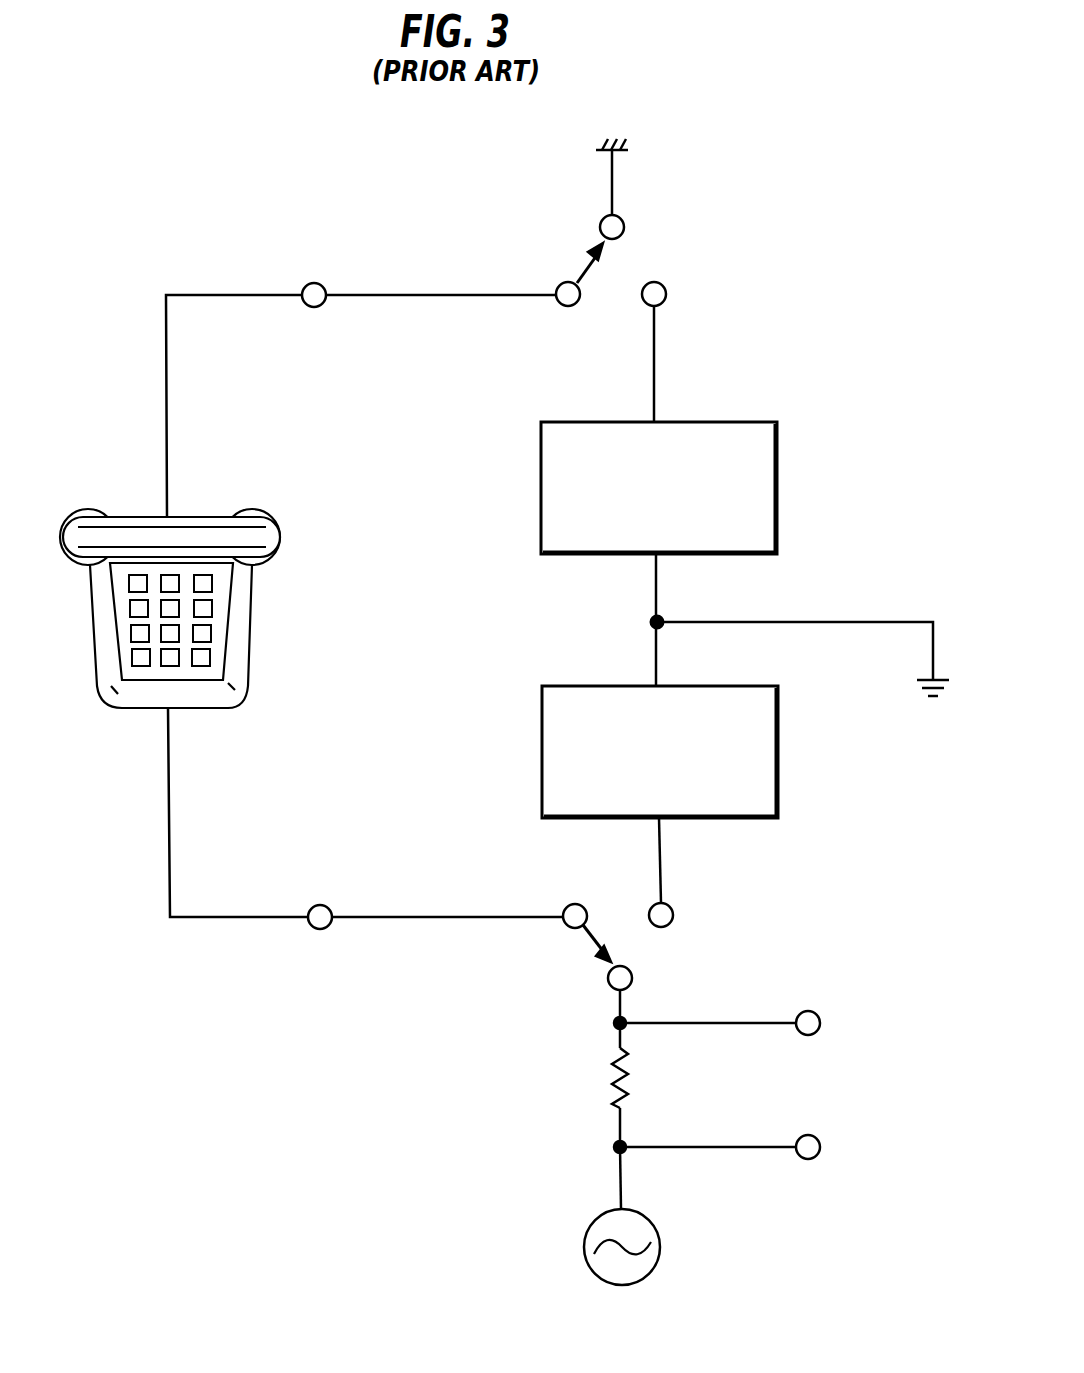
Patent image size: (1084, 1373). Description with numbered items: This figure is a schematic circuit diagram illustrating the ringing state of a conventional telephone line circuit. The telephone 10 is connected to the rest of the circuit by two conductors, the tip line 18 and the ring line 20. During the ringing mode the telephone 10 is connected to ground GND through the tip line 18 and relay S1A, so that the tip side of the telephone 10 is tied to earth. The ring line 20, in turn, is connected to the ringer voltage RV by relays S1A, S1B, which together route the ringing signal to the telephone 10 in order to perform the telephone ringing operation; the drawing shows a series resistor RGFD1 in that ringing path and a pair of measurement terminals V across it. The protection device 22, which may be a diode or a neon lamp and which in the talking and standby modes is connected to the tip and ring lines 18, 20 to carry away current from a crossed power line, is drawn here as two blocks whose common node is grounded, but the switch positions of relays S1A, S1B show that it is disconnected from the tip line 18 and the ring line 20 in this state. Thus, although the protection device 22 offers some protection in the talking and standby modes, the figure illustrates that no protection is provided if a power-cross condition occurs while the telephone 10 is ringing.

The telephone 10 is at (140, 516).
The tip line 18 is at (285, 293).
The ring line 20 is at (291, 915).
The protection device 22 is at (558, 637).
The relay S1A is at (613, 263).
The relay S1B is at (612, 926).
The resistor RGFD1 is at (570, 1085).
The voltage measurement terminals V is at (778, 1077).
The ringer voltage RV is at (647, 1218).
The ground GND is at (608, 159).